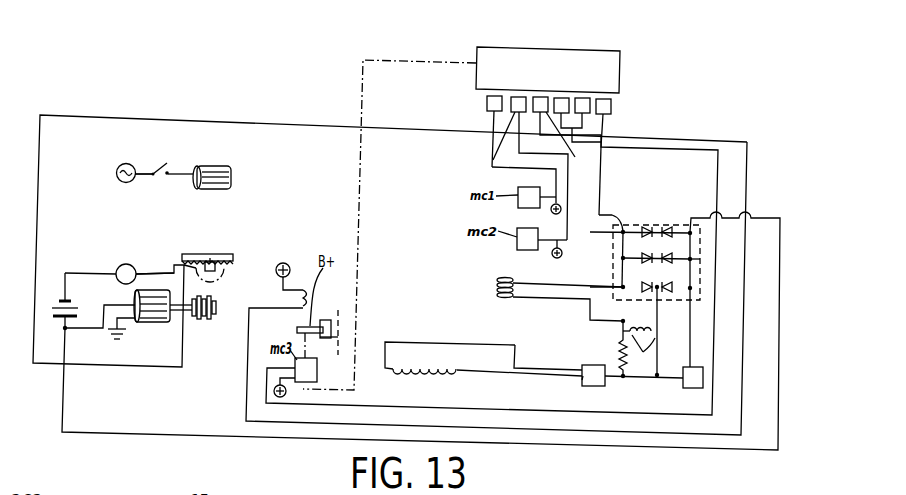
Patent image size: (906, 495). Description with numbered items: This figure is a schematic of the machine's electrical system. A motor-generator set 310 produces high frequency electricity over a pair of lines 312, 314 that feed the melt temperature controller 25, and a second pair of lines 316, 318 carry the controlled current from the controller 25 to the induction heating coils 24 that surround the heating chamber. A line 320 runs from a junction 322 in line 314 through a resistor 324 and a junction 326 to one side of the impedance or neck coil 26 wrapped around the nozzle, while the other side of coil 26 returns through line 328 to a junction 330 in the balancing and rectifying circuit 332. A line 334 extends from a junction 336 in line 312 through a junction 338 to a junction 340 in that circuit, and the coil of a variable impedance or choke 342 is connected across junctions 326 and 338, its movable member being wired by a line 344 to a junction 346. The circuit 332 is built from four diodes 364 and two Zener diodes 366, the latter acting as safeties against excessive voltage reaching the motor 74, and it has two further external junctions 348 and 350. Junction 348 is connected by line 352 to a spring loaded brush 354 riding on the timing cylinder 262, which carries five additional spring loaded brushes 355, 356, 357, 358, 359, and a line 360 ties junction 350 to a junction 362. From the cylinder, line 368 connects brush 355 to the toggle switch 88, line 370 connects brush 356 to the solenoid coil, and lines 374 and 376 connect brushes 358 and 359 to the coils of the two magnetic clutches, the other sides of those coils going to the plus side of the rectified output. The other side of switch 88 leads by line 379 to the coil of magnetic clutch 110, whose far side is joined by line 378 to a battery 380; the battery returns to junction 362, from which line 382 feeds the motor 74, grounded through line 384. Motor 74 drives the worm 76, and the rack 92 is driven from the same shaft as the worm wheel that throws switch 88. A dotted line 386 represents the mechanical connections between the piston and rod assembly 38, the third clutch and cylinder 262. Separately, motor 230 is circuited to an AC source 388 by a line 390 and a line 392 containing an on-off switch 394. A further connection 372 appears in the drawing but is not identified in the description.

The line 368 is at (390, 229).
The line 370 is at (246, 384).
The line 360 is at (779, 302).
The battery 380 is at (55, 290).
The line 378 is at (92, 272).
The magnetic clutch 110 is at (126, 264).
The line 379 is at (152, 272).
The line 382 is at (113, 305).
The junction 362 is at (66, 331).
The line 384 is at (126, 330).
The motor 74 is at (149, 323).
The worm 76 is at (205, 320).
The toggle-type switch 88 is at (218, 273).
The rack 92 is at (230, 256).
The source of AC electricity 388 is at (123, 166).
The on-off switch 394 is at (158, 172).
The line 392 is at (182, 170).
The motor 230 is at (214, 169).
The line 390 is at (157, 181).
The dotted line 386 is at (364, 213).
The timing cylinder 262 is at (476, 52).
The spring loaded brush 359 is at (486, 103).
The spring loaded brush 356 is at (607, 95).
The spring loaded brush 354 is at (613, 108).
The spring loaded brush 355 is at (607, 114).
The spring loaded brush 358 is at (493, 148).
The line 376 is at (493, 167).
The spring loaded brush 357 is at (558, 176).
The line 374 is at (568, 230).
The junction 348 is at (595, 219).
The circuit enclosure 372 is at (715, 160).
The line 352 is at (603, 178).
The Zener diode 366 is at (645, 224).
The diode 364 is at (652, 250).
The balancing and rectifying circuit 332 is at (655, 214).
The junction 350 is at (694, 248).
The junction 346 is at (691, 290).
The line 344 is at (691, 327).
The junction 340 is at (638, 308).
The line 334 is at (669, 330).
The impedance coil 26 is at (498, 279).
The line 328 is at (547, 282).
The junction 330 is at (622, 284).
The line 320 is at (589, 311).
The variable impedance or choke 342 is at (622, 319).
The junction 326 is at (628, 333).
The resistor 324 is at (620, 348).
The junction 338 is at (655, 340).
The junction 336 is at (659, 374).
The induction heating coils 24 is at (400, 372).
The line 318 is at (512, 377).
The line 316 is at (533, 368).
The junction 322 is at (618, 380).
The melt temperature controlling means 25 is at (581, 381).
The motor-generator set 310 is at (695, 388).
The line 314 is at (625, 378).
The line 312 is at (667, 379).
The piston and rod assembly 38 is at (314, 318).